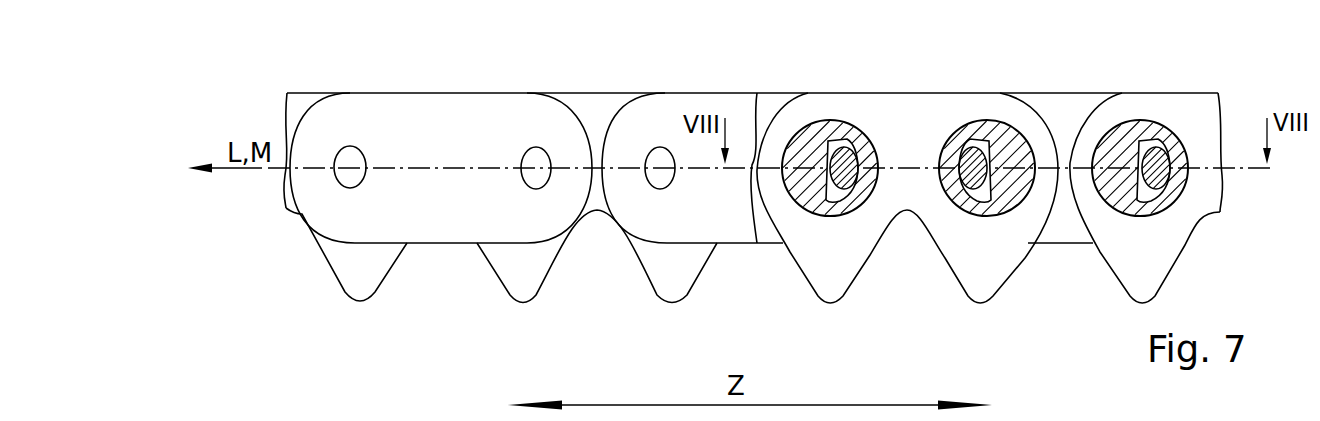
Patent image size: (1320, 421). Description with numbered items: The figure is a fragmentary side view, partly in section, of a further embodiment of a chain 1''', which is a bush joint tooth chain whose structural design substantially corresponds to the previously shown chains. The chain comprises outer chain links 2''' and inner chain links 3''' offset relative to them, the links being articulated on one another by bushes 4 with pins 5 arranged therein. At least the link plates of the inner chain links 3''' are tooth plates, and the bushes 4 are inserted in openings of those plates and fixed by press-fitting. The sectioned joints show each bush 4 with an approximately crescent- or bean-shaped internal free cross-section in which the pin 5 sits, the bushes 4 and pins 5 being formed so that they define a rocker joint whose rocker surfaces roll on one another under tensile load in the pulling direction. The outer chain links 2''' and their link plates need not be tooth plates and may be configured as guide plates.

The chain 1''' is at (701, 132).
The outer chain links 2''' is at (501, 203).
The tooth link plate 3''' is at (988, 226).
The bush 4 is at (806, 147).
The pin 5 is at (838, 140).